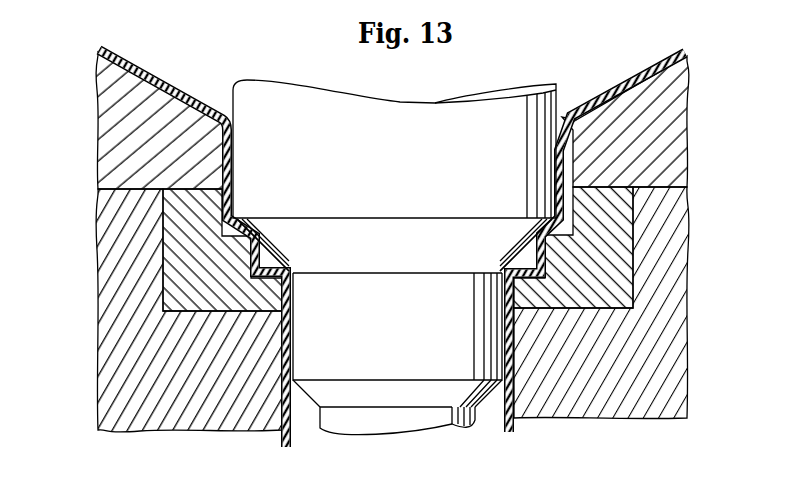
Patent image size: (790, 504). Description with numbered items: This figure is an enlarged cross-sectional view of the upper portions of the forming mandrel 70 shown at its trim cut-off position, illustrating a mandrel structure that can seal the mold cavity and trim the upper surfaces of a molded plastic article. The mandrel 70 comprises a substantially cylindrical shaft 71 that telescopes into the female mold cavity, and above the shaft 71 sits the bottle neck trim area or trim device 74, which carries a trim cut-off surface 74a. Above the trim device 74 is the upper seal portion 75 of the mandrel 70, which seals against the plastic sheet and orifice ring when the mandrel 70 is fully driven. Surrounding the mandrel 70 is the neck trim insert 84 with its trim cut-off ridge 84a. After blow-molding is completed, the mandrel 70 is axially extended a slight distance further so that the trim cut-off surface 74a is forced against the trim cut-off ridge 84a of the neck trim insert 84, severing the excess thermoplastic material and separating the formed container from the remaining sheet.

The mandrel 70 is at (394, 231).
The cylindrical shaft 71 is at (390, 329).
The trim device 74 is at (390, 253).
The trim cut-off surface 74a is at (237, 242).
The upper seal portion 75 is at (410, 151).
The neck trim insert 84 is at (617, 237).
The trim cut-off ridge 84a is at (237, 242).